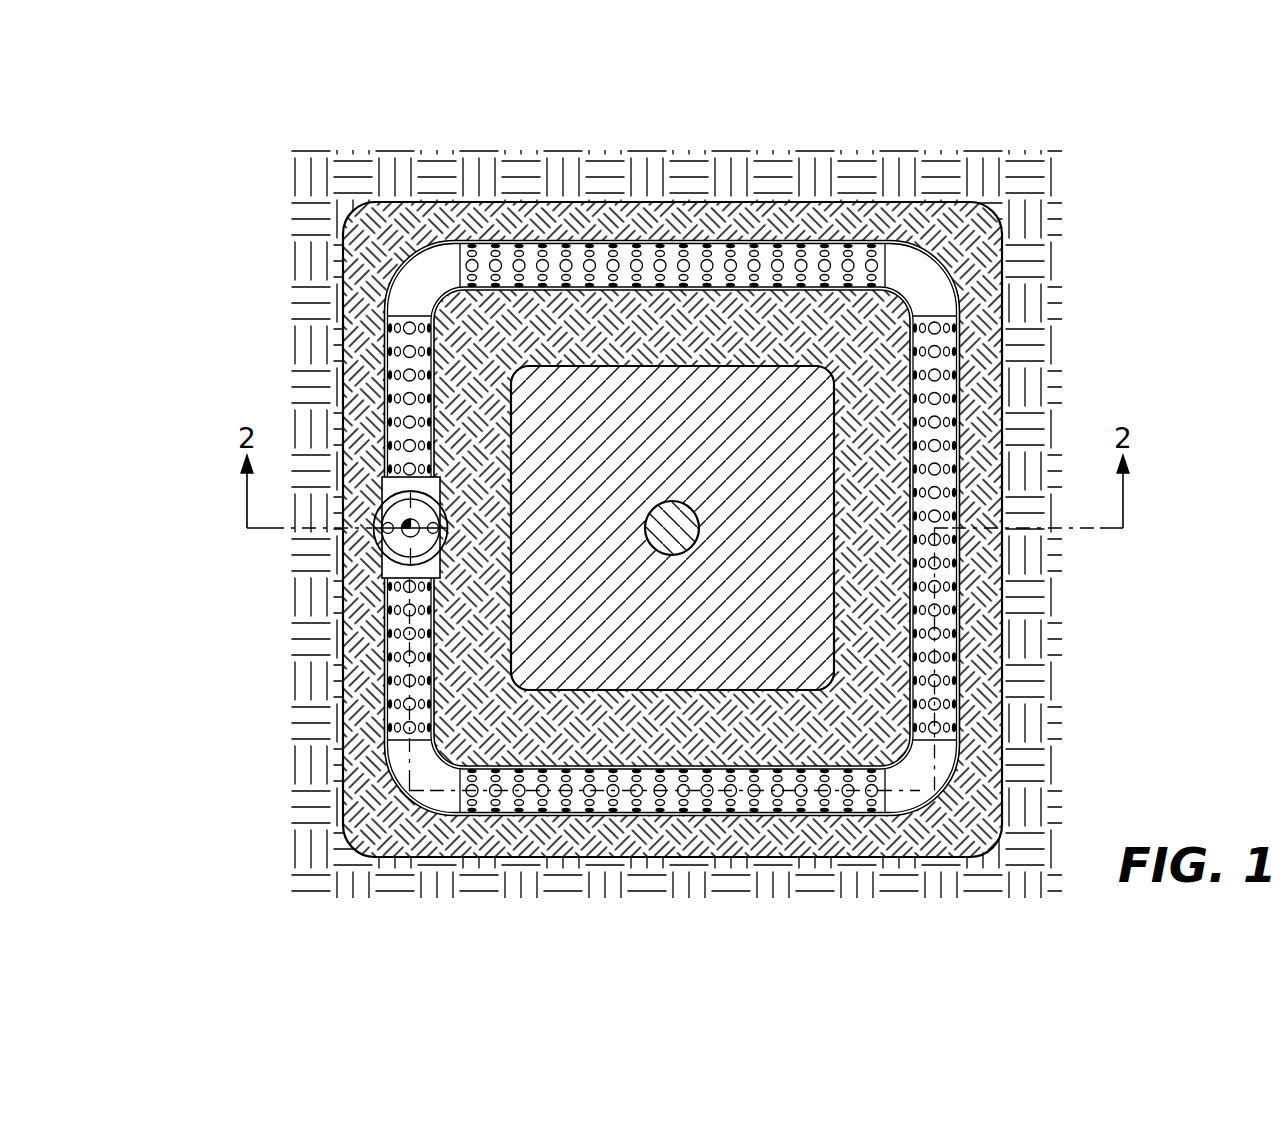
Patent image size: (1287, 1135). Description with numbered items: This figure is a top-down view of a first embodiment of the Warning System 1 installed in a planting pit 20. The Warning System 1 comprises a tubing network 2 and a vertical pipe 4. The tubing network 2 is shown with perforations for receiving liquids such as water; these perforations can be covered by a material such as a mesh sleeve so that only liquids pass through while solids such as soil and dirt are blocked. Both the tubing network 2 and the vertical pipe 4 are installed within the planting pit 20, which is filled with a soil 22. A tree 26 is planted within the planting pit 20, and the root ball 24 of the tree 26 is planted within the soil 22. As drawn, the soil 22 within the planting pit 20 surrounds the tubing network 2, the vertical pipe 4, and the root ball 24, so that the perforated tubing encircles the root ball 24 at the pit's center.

The Warning System 1 is at (282, 168).
The tubing network 2 is at (385, 352).
The vertical pipe 4 is at (373, 548).
The planting pit 20 is at (977, 202).
The soil 22 is at (875, 338).
The root ball 24 is at (834, 633).
The tree 26 is at (680, 555).